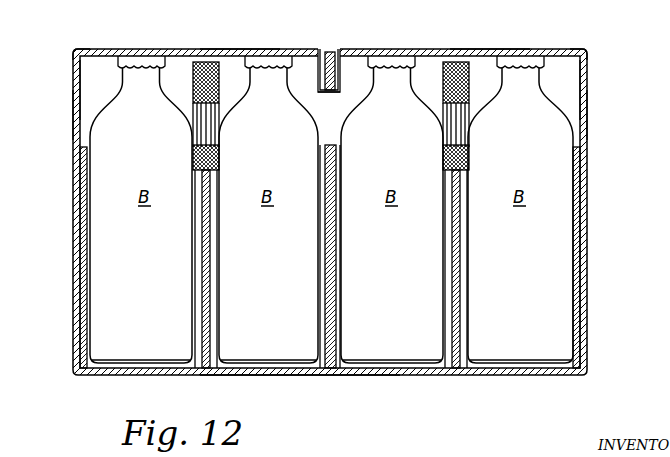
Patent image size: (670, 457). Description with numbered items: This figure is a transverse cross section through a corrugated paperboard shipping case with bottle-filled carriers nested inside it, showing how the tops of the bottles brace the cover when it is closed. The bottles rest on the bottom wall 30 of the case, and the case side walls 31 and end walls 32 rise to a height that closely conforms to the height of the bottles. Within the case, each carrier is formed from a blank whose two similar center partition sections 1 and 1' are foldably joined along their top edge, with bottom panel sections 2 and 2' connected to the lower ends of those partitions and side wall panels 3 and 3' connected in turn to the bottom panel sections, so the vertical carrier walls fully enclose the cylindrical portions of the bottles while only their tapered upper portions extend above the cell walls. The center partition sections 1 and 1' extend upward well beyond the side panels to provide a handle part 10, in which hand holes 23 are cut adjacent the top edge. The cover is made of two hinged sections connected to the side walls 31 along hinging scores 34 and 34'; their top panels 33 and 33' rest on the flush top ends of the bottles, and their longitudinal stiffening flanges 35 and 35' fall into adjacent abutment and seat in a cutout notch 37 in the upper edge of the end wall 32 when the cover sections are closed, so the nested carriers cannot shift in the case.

The hinging score 34' is at (60, 43).
The handle part 10 is at (196, 69).
The top panel 33' is at (240, 33).
The longitudinal stiffening flange 35' is at (318, 53).
The longitudinal stiffening flange 35 is at (348, 52).
The top panel 33 is at (490, 33).
The hinging score 34 is at (594, 40).
The end wall 32 is at (90, 85).
The side wall 31 is at (78, 111).
The hand hole 23 is at (210, 126).
The cutout notch 37 is at (335, 94).
The side wall panel 3' is at (202, 256).
The center partition section 1' is at (317, 256).
The center partition section 1 is at (346, 269).
The side wall panel 3 is at (434, 256).
The bottom panel section 2' is at (266, 345).
The bottom panel section 2 is at (396, 345).
The bottom wall 30 is at (292, 377).